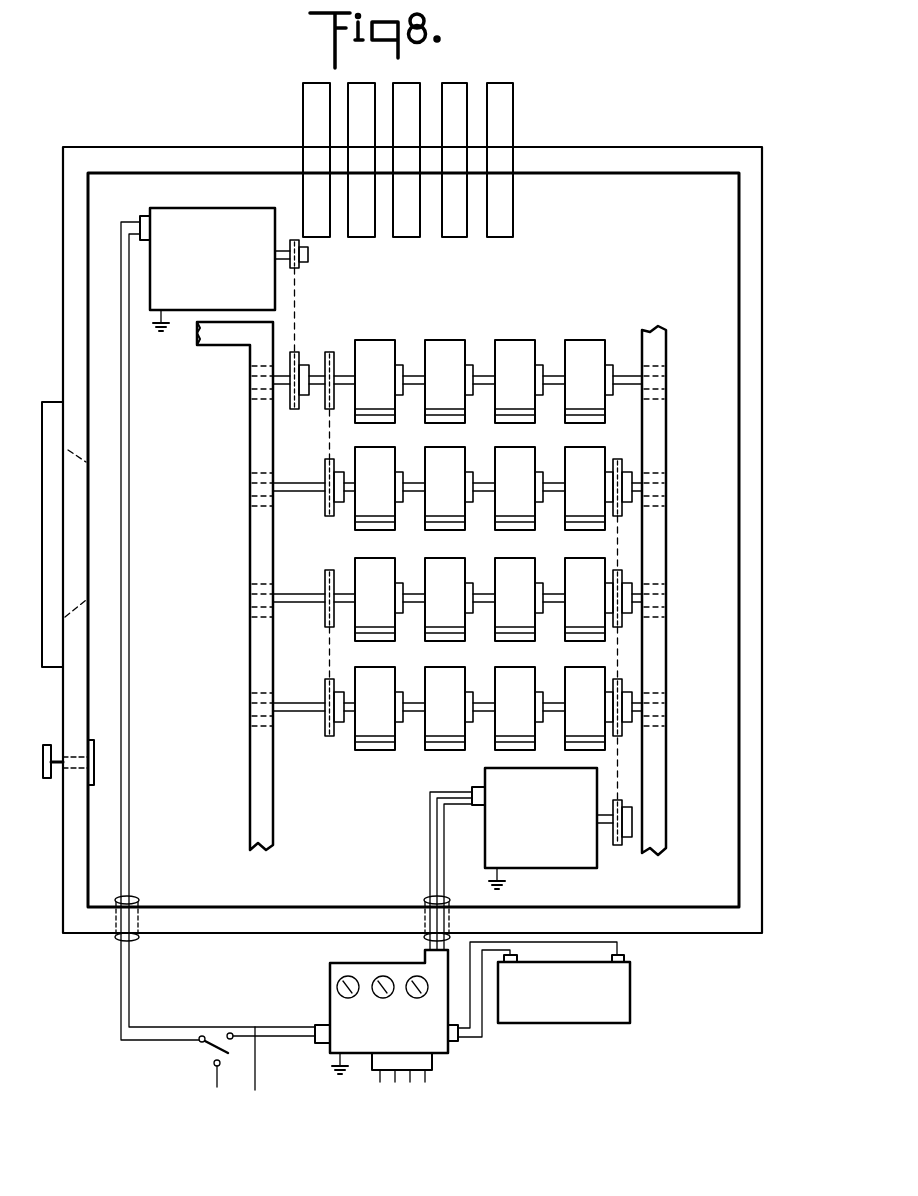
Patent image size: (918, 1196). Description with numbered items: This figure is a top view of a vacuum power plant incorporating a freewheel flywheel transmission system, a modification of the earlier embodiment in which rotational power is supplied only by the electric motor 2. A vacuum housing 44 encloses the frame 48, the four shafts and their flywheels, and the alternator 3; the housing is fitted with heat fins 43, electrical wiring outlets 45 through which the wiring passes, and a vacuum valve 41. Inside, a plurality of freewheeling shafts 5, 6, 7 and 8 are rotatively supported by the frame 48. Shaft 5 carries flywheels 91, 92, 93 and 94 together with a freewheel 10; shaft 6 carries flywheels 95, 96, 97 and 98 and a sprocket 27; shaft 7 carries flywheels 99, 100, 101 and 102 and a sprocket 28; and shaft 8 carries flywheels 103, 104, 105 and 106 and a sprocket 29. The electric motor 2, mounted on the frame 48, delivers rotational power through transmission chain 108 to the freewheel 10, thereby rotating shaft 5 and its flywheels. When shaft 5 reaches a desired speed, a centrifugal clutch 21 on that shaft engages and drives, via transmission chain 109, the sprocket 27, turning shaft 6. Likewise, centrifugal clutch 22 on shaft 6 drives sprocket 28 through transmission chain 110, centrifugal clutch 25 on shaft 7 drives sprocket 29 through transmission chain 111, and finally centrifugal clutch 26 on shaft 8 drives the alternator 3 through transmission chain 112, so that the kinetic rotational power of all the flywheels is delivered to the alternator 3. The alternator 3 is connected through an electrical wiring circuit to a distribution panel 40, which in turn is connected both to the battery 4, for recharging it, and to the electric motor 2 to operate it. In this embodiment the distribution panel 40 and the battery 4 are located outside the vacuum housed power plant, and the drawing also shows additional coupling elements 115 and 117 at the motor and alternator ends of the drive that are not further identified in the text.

The electric motor 2 is at (210, 275).
The alternator 3 is at (542, 834).
The battery 4 is at (566, 1004).
The shaft 5 is at (408, 374).
The shaft 6 is at (410, 482).
The shaft 7 is at (410, 592).
The shaft 8 is at (410, 701).
The freewheel 10 is at (298, 352).
The centrifugal clutch 21 is at (332, 365).
The centrifugal clutch 22 is at (614, 462).
The centrifugal clutch 25 is at (325, 575).
The centrifugal clutch 26 is at (614, 683).
The sprocket 27 is at (325, 466).
The sprocket 28 is at (613, 575).
The sprocket 29 is at (325, 690).
The distribution panel 40 is at (330, 970).
The vacuum valve 41 is at (94, 757).
The heat fins 43 is at (390, 240).
The vacuum housing 44 is at (585, 173).
The electrical wiring outlets 45 is at (136, 900).
The frame 48 is at (250, 402).
The flywheel 91 is at (381, 386).
The flywheel 92 is at (451, 386).
The flywheel 93 is at (521, 386).
The flywheel 94 is at (591, 386).
The flywheel 95 is at (381, 493).
The flywheel 96 is at (451, 493).
The flywheel 97 is at (521, 493).
The flywheel 98 is at (591, 493).
The flywheel 99 is at (381, 604).
The flywheel 100 is at (451, 604).
The flywheel 101 is at (521, 604).
The flywheel 102 is at (591, 604).
The flywheel 103 is at (381, 713).
The flywheel 104 is at (451, 713).
The flywheel 105 is at (521, 713).
The flywheel 106 is at (591, 713).
The transmission chain 108 is at (296, 305).
The transmission chain 109 is at (328, 432).
The transmission chain 110 is at (619, 535).
The transmission chain 111 is at (328, 648).
The transmission chain 112 is at (619, 757).
The contact disc 115 is at (624, 800).
The contact disc 117 is at (288, 243).